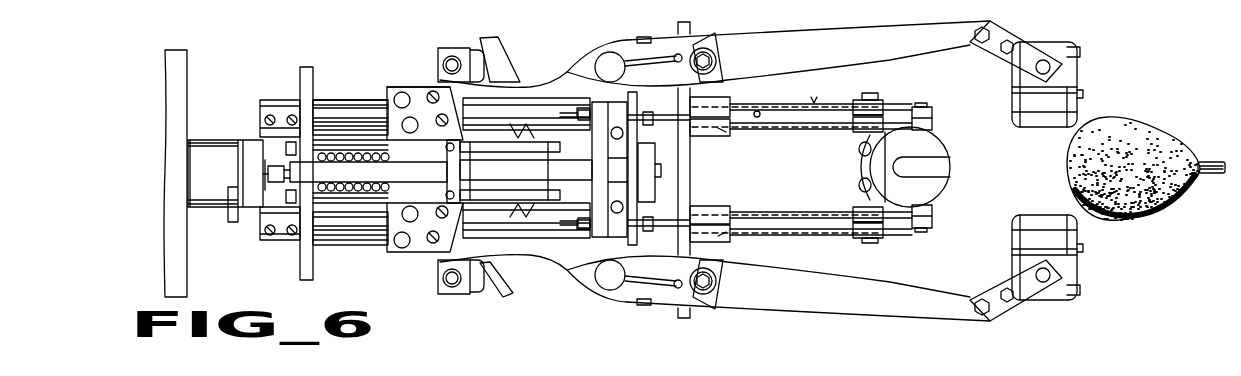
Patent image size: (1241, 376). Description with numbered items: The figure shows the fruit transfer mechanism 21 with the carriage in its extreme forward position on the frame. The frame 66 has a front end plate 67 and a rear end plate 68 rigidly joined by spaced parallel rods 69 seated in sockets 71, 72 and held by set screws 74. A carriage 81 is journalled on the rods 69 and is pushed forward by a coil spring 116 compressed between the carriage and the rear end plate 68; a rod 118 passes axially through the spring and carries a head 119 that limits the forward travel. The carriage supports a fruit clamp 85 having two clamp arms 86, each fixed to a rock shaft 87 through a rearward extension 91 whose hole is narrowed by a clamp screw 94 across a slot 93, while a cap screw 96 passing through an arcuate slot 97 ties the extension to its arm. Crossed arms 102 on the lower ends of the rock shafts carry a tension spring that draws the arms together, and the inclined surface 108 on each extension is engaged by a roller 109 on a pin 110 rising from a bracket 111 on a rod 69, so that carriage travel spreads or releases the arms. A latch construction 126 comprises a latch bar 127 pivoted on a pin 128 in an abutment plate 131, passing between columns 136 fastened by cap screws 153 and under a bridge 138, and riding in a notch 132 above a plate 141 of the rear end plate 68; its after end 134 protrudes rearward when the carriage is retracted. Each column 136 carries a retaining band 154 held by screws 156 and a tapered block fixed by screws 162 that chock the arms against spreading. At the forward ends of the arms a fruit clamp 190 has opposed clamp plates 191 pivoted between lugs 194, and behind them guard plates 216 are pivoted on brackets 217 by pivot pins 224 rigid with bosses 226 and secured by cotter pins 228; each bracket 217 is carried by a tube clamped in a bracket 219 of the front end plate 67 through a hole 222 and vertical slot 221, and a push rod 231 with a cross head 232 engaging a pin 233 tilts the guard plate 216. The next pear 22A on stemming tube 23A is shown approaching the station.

The transfer mechanism 21 is at (405, 70).
The frame 66 is at (300, 97).
The rear end plate 68 is at (306, 280).
The rods 69 is at (327, 100).
The set screws 74 is at (266, 115).
The sockets 72 is at (265, 137).
The latch construction 126 is at (266, 166).
The after end of latch bar 134 is at (268, 183).
The plate 141 is at (350, 112).
The cap screws 153 is at (398, 103).
The notch 132 is at (308, 166).
The columns 136 is at (393, 136).
The carriage 81 is at (388, 152).
The coil spring 116 is at (330, 183).
The latch bar 127 is at (436, 173).
The bridge 138 is at (470, 173).
The abutment plate 131 is at (600, 173).
The pin 128 is at (598, 212).
The retaining band 154 is at (470, 112).
The screws 156 is at (400, 88).
The screws 162 is at (437, 167).
The roller 109 is at (447, 52).
The pin 110 is at (448, 283).
The bracket 111 is at (446, 70).
The inclined surface 108 is at (475, 50).
The arms 102 is at (497, 53).
The rearward extension 91 is at (524, 88).
The fruit clamp 85 is at (800, 30).
The clamp arms 86 is at (845, 34).
The rock shaft 87 is at (617, 75).
The slot 93 is at (667, 66).
The clamp screw 94 is at (642, 37).
The cap screw 96 is at (717, 61).
The slot 97 is at (714, 35).
The fruit clamp 190 is at (1085, 50).
The front end plate 67 is at (686, 314).
The rod 118 is at (657, 168).
The head 119 is at (650, 184).
The bracket 219 is at (712, 100).
The hole 222 is at (735, 130).
The vertical slot 221 is at (712, 132).
The sockets 71 is at (725, 130).
The boss 226 is at (859, 146).
The pivot pin 224 is at (856, 174).
The cotter pin 228 is at (876, 93).
The bracket 217 is at (878, 105).
The guard plates 216 is at (940, 158).
The push rod 231 is at (933, 125).
The cross head 232 is at (933, 116).
The pin 233 is at (925, 104).
The clamp plate 191 is at (1018, 103).
The lugs 194 is at (1100, 255).
The pear 22A is at (1137, 140).
The stemming tube 23A is at (1213, 175).